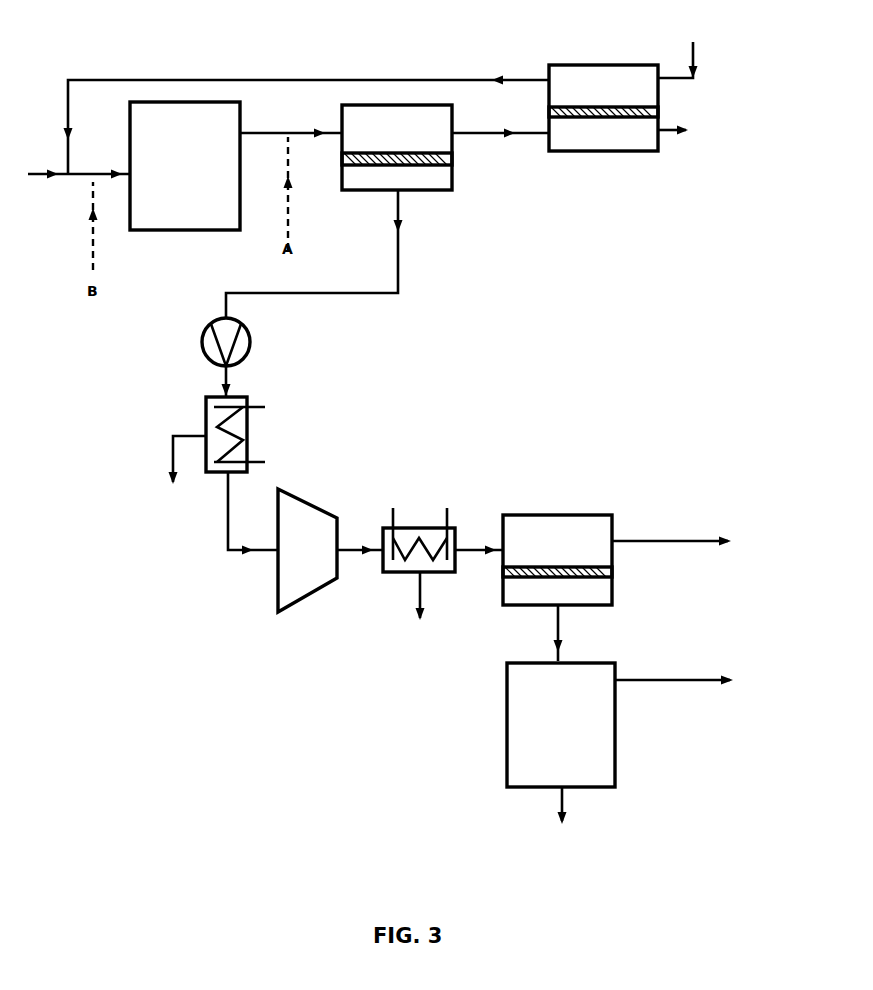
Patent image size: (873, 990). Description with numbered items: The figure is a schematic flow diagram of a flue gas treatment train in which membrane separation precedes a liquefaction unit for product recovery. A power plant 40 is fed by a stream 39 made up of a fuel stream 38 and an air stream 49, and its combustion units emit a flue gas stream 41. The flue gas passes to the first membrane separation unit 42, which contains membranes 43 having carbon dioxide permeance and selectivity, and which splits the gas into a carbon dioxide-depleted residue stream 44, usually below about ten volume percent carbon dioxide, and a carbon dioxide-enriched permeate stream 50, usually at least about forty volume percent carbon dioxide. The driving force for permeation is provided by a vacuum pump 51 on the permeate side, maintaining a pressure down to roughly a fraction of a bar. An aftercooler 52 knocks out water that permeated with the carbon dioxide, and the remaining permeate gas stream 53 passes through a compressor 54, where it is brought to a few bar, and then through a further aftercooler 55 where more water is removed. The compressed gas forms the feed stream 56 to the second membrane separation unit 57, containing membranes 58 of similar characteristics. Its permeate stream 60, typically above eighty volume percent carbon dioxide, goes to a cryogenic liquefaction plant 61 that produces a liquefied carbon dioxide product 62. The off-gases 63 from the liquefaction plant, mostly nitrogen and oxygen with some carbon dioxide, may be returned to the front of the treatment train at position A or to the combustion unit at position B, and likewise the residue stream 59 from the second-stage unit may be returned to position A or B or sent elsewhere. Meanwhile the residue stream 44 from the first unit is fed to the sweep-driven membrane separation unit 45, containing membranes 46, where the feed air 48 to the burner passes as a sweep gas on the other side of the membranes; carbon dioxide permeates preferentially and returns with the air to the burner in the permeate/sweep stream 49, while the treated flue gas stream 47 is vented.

The fuel stream 38 is at (43, 168).
The feed stream 39 is at (99, 168).
The power plant 40 is at (179, 230).
The flue gas stream 41 is at (291, 126).
The first membrane separation unit 42 is at (424, 147).
The membranes 43 is at (374, 153).
The carbon dioxide-depleted residue stream 44 is at (500, 123).
The sweep-driven membrane separation unit 45 is at (603, 133).
The membranes 46 is at (582, 107).
The treated flue gas stream 47 is at (684, 131).
The feed air 48 is at (681, 50).
The permeate/sweep stream 49 is at (307, 117).
The carbon dioxide-enriched permeate stream 50 is at (328, 254).
The vacuum pump 51 is at (250, 342).
The aftercooler 52 is at (206, 398).
The remaining permeate gas stream 53 is at (253, 513).
The compressor 54 is at (302, 598).
The aftercooler 55 is at (430, 528).
The feed stream 56 is at (479, 538).
The second membrane separation unit 57 is at (557, 536).
The membranes 58 is at (538, 567).
The residue stream 59 is at (707, 552).
The permeate stream 60 is at (572, 633).
The cryogenic liquefaction plant 61 is at (507, 690).
The liquefied carbon dioxide product 62 is at (564, 818).
The off-gases 63 is at (710, 689).